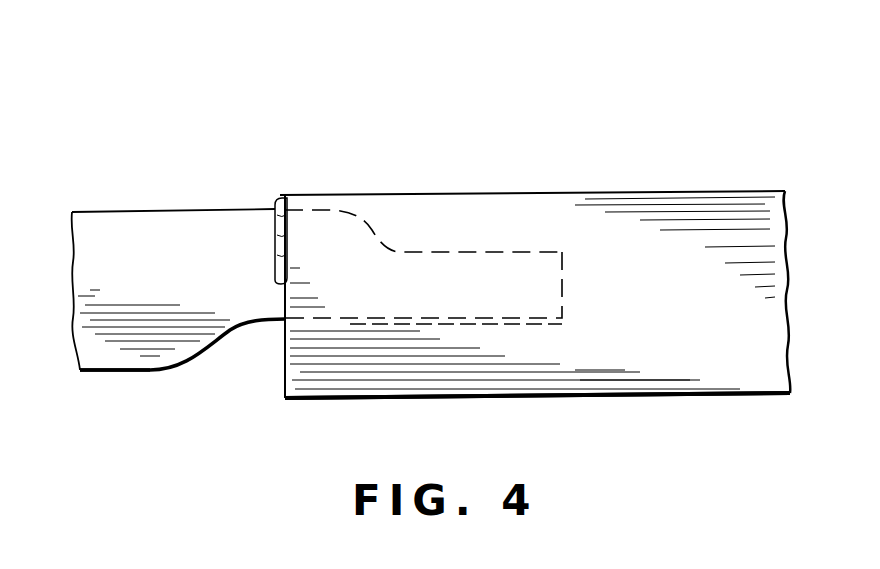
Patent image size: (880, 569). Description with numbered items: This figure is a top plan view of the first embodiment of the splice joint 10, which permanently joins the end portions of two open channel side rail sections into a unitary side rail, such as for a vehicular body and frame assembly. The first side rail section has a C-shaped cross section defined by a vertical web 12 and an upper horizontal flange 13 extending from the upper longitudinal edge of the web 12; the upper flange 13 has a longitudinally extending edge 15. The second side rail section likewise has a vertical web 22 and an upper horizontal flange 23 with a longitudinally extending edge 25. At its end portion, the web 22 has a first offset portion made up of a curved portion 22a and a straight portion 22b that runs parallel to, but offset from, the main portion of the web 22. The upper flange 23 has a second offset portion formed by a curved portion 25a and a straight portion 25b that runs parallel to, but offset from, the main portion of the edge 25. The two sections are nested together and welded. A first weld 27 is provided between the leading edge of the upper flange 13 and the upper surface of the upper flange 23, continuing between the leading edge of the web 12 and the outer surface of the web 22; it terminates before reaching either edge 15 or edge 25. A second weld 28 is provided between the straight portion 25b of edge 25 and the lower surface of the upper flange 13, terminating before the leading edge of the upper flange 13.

The splice joint 10 is at (607, 121).
The vertical web 12 is at (617, 192).
The upper horizontal flange 13 is at (722, 306).
The longitudinally extending edge 15 is at (678, 395).
The vertical web 22 is at (112, 212).
The curved portion 22a is at (386, 230).
The straight portion 22b is at (510, 252).
The upper horizontal flange 23 is at (153, 292).
The longitudinally extending edge 25 is at (110, 373).
The curved portion 25a is at (215, 342).
The straight portion 25b is at (344, 322).
The first weld 27 is at (262, 222).
The second weld 28 is at (466, 322).